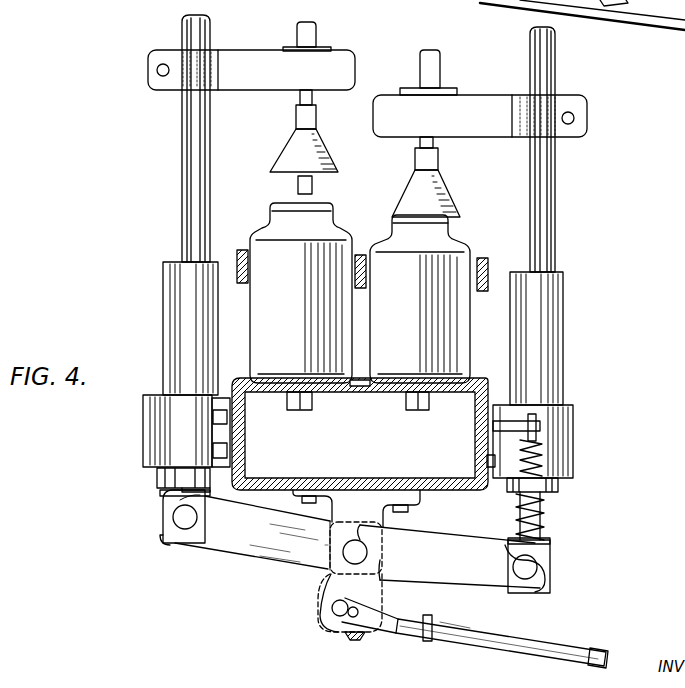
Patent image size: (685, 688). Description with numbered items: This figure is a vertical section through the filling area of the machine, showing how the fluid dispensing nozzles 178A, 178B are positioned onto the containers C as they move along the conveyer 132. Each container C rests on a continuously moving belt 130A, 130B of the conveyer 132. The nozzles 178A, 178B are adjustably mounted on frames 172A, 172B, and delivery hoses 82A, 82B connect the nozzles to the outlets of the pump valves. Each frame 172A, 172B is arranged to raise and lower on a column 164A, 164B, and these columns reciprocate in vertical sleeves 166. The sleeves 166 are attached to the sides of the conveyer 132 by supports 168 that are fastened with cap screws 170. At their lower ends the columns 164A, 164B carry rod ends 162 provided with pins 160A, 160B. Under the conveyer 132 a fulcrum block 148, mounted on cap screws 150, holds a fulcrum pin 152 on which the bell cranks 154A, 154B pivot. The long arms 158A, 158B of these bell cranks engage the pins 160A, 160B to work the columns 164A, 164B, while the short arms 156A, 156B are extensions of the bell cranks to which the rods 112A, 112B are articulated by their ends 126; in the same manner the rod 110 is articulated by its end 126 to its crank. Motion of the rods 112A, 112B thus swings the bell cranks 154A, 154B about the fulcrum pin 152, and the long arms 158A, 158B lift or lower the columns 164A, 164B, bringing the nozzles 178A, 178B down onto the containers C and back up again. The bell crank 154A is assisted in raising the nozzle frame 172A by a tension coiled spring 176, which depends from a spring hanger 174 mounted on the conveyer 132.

The rod 110 is at (582, 40).
The column 164B is at (181, 157).
The column 164A is at (555, 180).
The frame 172B is at (245, 33).
The nozzle frame 172A is at (495, 80).
The delivery hose 82B is at (318, 40).
The delivery hose 82A is at (440, 58).
The fluid dispensing nozzle 178B is at (282, 160).
The fluid dispensing nozzle 178A is at (455, 187).
The container C is at (270, 228).
The vertical sleeve 166 is at (163, 303).
The support 168 is at (143, 445).
The cap screw 170 is at (213, 452).
The spring hanger 174 is at (540, 428).
The tension coiled spring 176 is at (545, 510).
The conveyer 132 is at (277, 486).
The belt 130B is at (300, 412).
The belt 130A is at (418, 412).
The fulcrum block 148 is at (385, 521).
The cap screw 150 is at (409, 504).
The pin 160B is at (180, 517).
The pin 160A is at (537, 570).
The rod end 162 is at (163, 535).
The long arm 158B is at (232, 556).
The long arm 158A is at (448, 583).
The bell crank 154B is at (282, 578).
The bell crank 154A is at (476, 591).
The fulcrum pin 152 is at (362, 553).
The short arm 156A is at (318, 617).
The short arm 156B is at (358, 634).
The rod end 126 is at (405, 640).
The rod 112A is at (590, 650).
The rod 112B is at (597, 652).